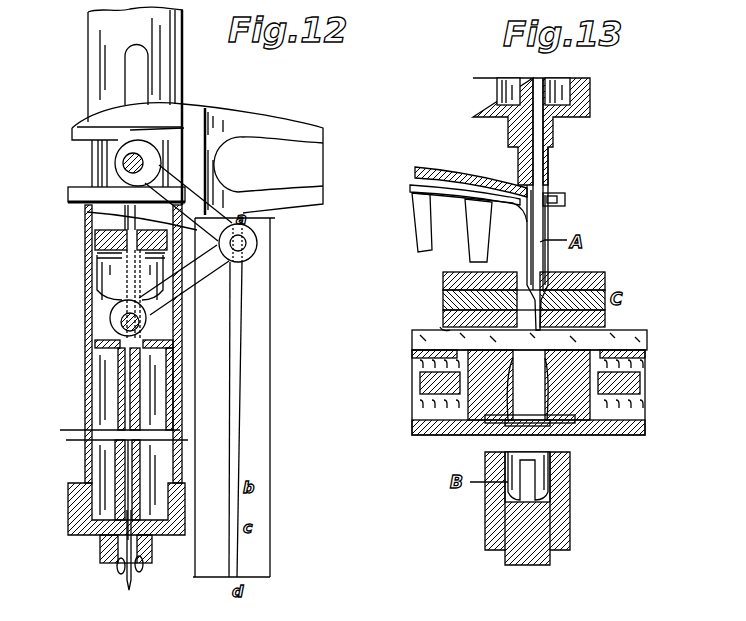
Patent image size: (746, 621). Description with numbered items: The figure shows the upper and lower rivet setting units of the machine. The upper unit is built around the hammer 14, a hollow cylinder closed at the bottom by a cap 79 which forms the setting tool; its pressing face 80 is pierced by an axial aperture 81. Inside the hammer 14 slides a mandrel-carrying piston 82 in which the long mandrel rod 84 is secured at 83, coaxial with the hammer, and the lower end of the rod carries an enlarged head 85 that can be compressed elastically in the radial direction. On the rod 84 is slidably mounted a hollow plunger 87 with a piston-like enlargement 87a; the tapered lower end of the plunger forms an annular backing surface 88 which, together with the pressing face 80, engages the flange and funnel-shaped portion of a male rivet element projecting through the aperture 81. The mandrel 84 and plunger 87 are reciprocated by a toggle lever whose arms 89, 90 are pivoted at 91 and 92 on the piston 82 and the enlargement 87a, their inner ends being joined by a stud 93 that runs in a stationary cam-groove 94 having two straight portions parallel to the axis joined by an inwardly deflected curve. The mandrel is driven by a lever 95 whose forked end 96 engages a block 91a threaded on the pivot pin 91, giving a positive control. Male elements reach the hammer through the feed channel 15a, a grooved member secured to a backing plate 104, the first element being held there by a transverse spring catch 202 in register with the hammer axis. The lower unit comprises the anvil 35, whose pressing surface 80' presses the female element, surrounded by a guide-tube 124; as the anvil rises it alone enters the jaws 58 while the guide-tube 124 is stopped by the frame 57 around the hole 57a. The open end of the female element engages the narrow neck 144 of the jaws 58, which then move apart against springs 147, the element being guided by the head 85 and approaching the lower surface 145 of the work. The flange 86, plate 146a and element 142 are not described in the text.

In FIG. 12, the hammer 14 is at (80, 425).
In FIG. 13, the feed channel 15a is at (416, 185).
In FIG. 13, the anvil 35 is at (535, 530).
In FIG. 13, the frame 57 is at (415, 432).
In FIG. 13, the hole 57a is at (548, 428).
In FIG. 13, the jaws 58 is at (468, 432).
In FIG. 12, the cap 79 is at (139, 549).
In FIG. 13, the cap 79 is at (515, 118).
In FIG. 12, the pressing face 80 is at (155, 572).
In FIG. 13, the pressing face 80 is at (569, 164).
In FIG. 13, the pressing surface 80' is at (556, 476).
In FIG. 12, the axial aperture 81 is at (128, 575).
In FIG. 12, the mandrel-carrying piston 82 is at (95, 242).
In FIG. 12, the securing point 83 is at (90, 262).
In FIG. 12, the mandrel rod 84 is at (130, 478).
In FIG. 12, the enlarged head 85 is at (118, 568).
In FIG. 13, the enlarged head 85 is at (527, 280).
In FIG. 12, the flange 86 is at (125, 535).
In FIG. 12, the hollow plunger 87 is at (145, 410).
In FIG. 13, the hollow plunger 87 is at (547, 172).
In FIG. 12, the piston-like enlargement 87a is at (118, 278).
In FIG. 12, the annular backing surface 88 is at (118, 470).
In FIG. 13, the annular backing surface 88 is at (552, 190).
In FIG. 12, the toggle arm 89 is at (178, 202).
In FIG. 12, the toggle arm 90 is at (183, 275).
In FIG. 12, the pivot pin 91 is at (143, 163).
In FIG. 12, the block 91a is at (77, 128).
In FIG. 12, the pivot 92 is at (140, 322).
In FIG. 12, the stud 93 is at (247, 243).
In FIG. 12, the cam-groove 94 is at (240, 395).
In FIG. 12, the lever 95 is at (290, 162).
In FIG. 12, the forked end 96 is at (80, 185).
In FIG. 13, the backing plate 104 is at (443, 170).
In FIG. 13, the guide-tube 124 is at (497, 517).
In FIG. 13, the block 142 is at (550, 290).
In FIG. 13, the narrow neck 144 is at (529, 385).
In FIG. 13, the lower surface 145 is at (445, 330).
In FIG. 13, the plate 146a is at (625, 342).
In FIG. 13, the springs 147 is at (425, 405).
In FIG. 13, the spring catch 202 is at (565, 200).